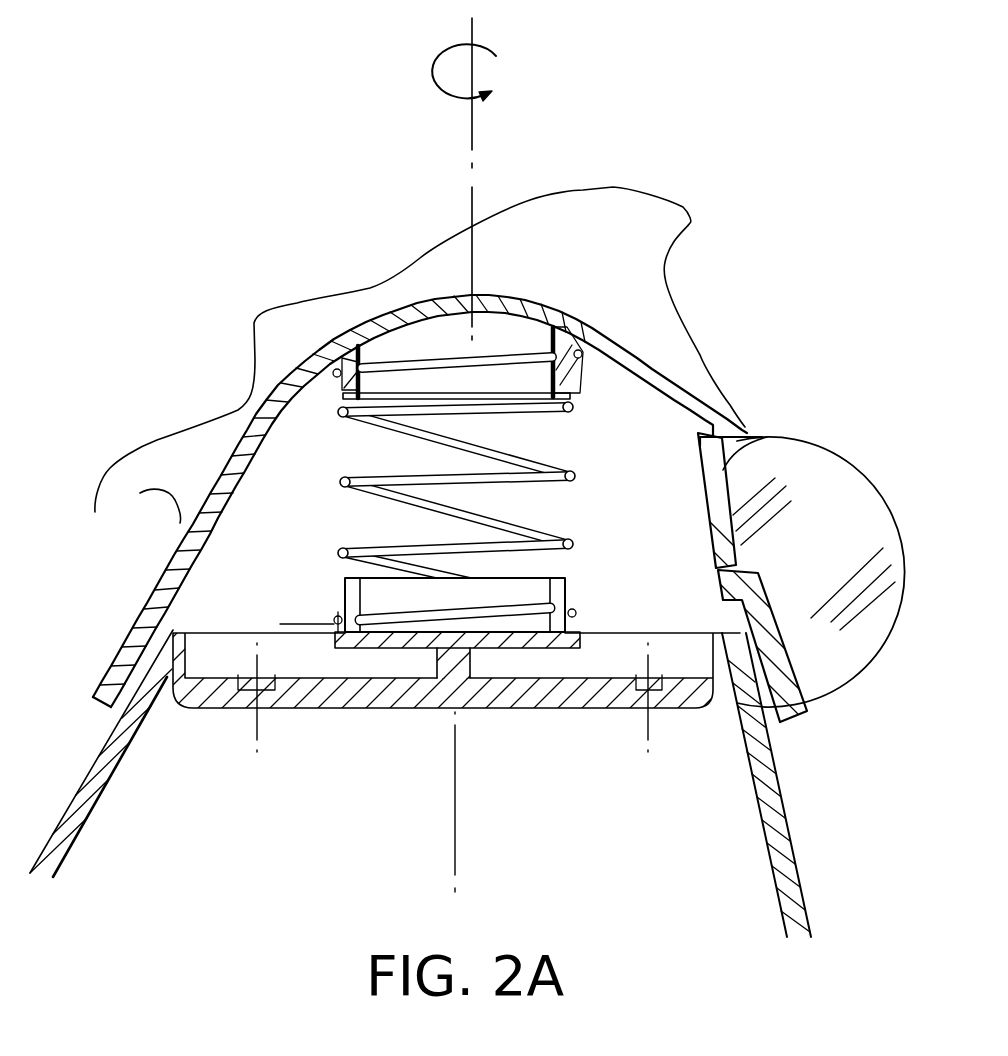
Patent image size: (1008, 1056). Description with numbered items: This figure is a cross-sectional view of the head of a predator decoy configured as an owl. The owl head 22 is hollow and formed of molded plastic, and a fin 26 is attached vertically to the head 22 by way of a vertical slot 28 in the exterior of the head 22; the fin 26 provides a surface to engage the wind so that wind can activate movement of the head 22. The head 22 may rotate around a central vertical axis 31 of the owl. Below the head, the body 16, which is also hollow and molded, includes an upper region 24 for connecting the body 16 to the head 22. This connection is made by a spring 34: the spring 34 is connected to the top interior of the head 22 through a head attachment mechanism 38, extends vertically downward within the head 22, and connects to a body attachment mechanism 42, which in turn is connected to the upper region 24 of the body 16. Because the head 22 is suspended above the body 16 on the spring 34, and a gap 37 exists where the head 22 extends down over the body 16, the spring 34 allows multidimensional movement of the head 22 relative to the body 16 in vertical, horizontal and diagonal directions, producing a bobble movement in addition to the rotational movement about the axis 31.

The body 16 is at (792, 880).
The owl head 22 is at (657, 410).
The upper region 24 is at (203, 680).
The fin 26 is at (840, 658).
The vertical slot 28 is at (770, 438).
The central vertical axis 31 is at (473, 28).
The spring 34 is at (383, 478).
The gap 37 is at (775, 733).
The head attachment mechanism 38 is at (340, 380).
The body attachment mechanism 42 is at (577, 636).